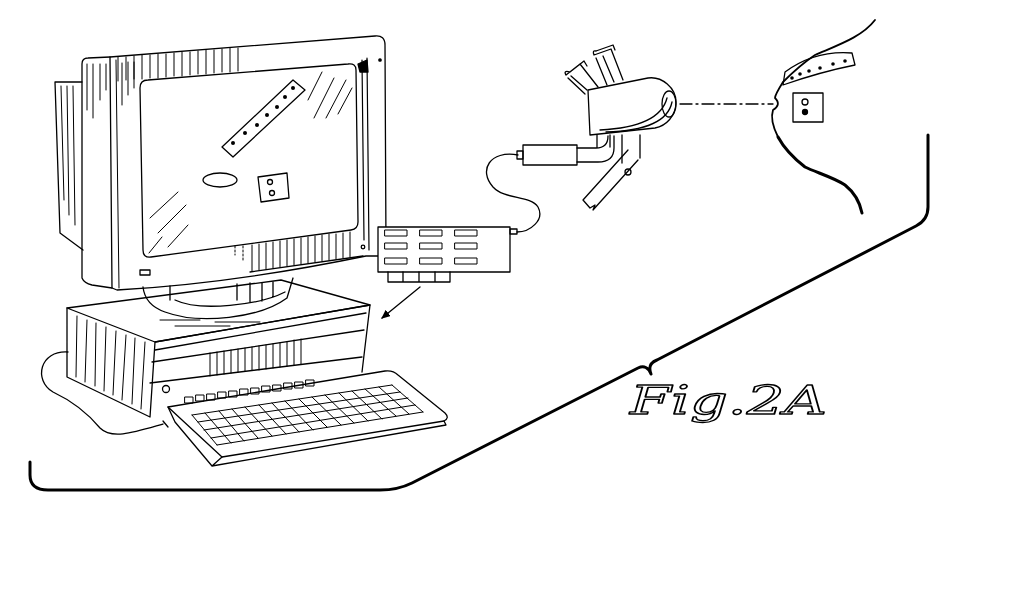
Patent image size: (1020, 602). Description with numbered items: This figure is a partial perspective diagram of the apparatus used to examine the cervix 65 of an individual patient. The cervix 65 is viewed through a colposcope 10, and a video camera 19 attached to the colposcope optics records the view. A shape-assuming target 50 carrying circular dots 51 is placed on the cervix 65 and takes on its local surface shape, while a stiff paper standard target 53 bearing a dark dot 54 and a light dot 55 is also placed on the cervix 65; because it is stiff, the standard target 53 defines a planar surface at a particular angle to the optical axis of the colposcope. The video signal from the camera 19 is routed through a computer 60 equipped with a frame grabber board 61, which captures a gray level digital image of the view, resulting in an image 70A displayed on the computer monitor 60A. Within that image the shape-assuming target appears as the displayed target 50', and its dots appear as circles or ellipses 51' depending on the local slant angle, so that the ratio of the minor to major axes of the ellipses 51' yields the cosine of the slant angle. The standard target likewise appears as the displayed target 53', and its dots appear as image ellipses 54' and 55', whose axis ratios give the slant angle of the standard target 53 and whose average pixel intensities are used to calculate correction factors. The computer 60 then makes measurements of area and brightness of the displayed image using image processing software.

The colposcope 10 is at (654, 131).
The video camera 19 is at (538, 144).
The shape-assuming target 50 is at (848, 48).
The image of shape-assuming target 50' is at (246, 118).
The dots of shape-assuming target 51 is at (854, 75).
The circles or ellipses 51' is at (232, 129).
The standard target 53 is at (840, 132).
The image of standard target 53' is at (242, 204).
The dark dot 54 is at (840, 103).
The image ellipse of dark dot 54' is at (308, 168).
The light dot 55 is at (840, 123).
The image ellipse of light dot 55' is at (300, 160).
The computer 60 is at (72, 406).
The computer monitor 60A is at (174, 95).
The frame grabber board 61 is at (498, 257).
The cervix 65 is at (795, 162).
The image 70A is at (330, 199).